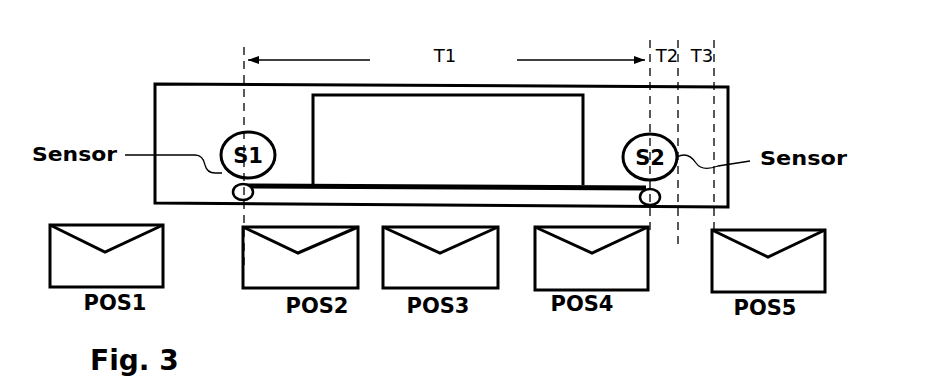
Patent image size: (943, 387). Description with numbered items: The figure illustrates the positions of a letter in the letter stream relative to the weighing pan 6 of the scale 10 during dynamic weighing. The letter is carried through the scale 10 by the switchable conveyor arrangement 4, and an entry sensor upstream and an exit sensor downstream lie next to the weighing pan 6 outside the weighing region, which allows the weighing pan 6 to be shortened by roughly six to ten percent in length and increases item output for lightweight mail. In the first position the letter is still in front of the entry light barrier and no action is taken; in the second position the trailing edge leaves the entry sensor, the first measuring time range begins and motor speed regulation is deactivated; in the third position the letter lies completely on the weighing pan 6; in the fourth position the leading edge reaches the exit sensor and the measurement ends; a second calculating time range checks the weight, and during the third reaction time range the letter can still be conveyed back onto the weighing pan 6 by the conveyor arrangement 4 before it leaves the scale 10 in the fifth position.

The switchable conveyor arrangement 4 is at (300, 184).
The weighing pan 6 is at (313, 97).
The scale 10 is at (742, 104).